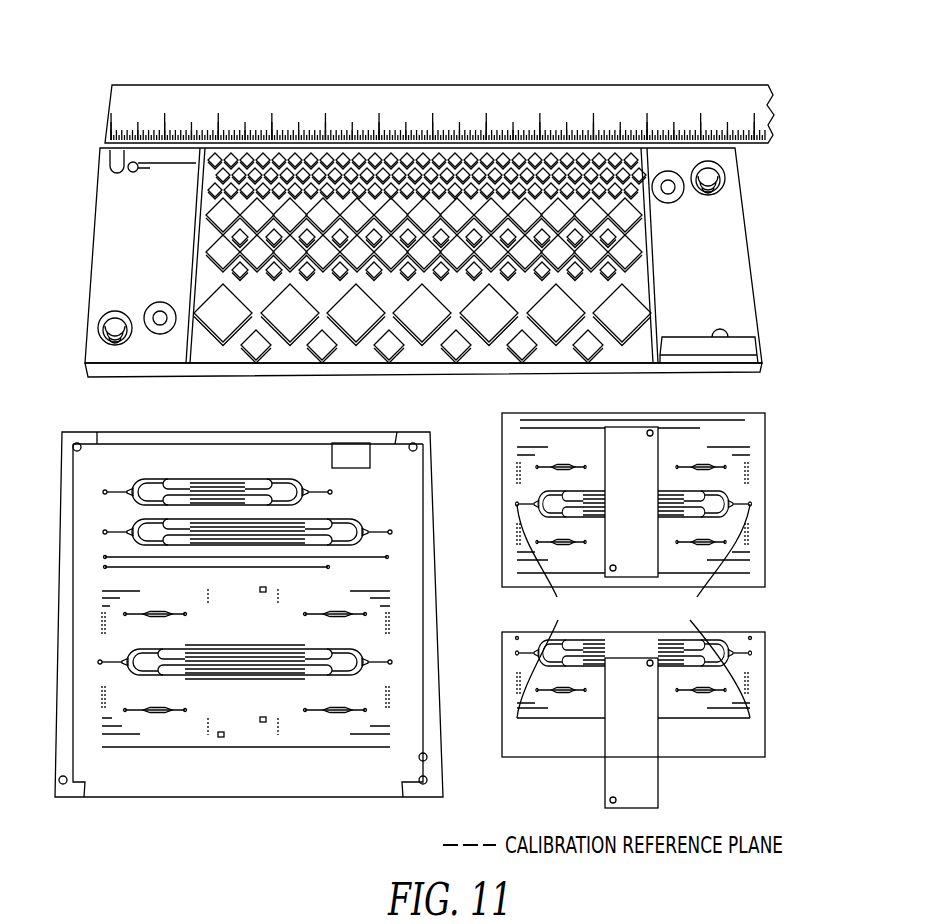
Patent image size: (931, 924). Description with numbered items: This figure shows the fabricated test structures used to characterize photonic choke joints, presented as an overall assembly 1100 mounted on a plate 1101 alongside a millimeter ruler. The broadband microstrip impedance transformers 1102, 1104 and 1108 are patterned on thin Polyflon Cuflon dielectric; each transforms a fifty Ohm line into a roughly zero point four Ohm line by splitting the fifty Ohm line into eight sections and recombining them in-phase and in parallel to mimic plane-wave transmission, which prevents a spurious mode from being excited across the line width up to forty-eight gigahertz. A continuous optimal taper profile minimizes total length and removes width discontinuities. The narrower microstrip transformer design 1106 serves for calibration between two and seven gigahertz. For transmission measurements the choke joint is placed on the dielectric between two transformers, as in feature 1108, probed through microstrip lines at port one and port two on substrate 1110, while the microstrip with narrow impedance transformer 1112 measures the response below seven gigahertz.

The calibration substrate assembly with ruler 1100 is at (441, 70).
The substrate holder plate 1101 is at (436, 366).
The microstrip impedance transformer 1102 is at (363, 489).
The microstrip impedance transformer 1104 is at (404, 527).
The narrower microstrip transformer design 1106 is at (404, 555).
The microstrip impedance transformer 1108 is at (404, 661).
The first probe calibration substrate (port 1 / port 2) 1110 is at (760, 499).
The microstrip with narrow impedance transformer 1112 is at (760, 645).